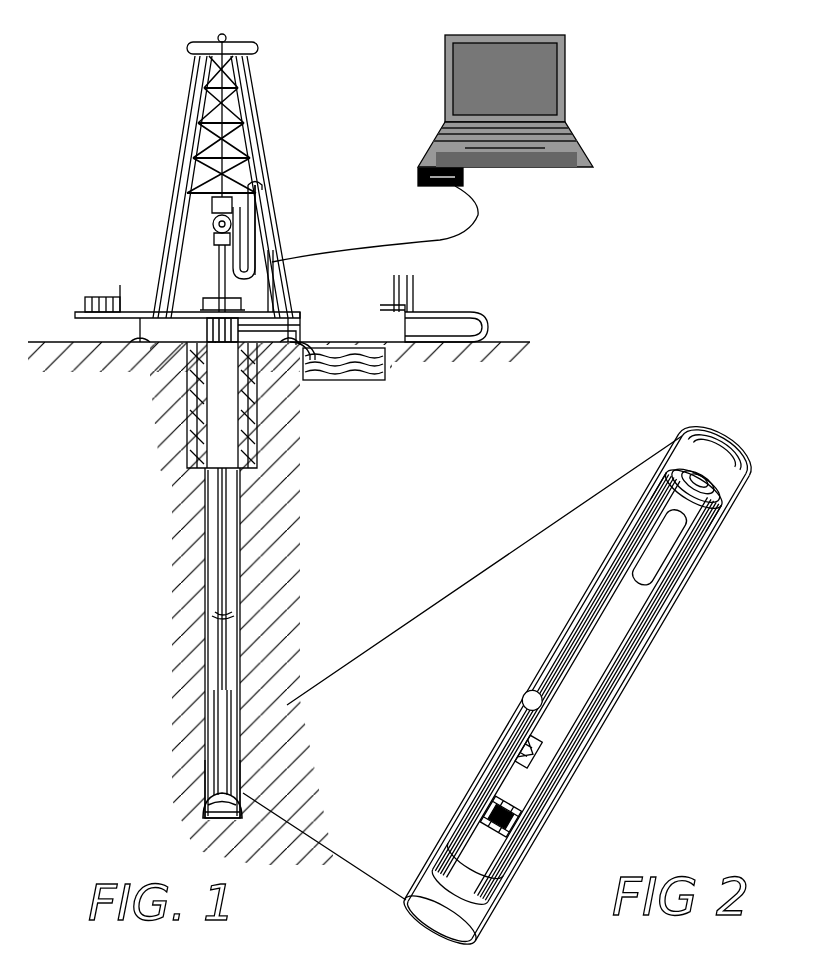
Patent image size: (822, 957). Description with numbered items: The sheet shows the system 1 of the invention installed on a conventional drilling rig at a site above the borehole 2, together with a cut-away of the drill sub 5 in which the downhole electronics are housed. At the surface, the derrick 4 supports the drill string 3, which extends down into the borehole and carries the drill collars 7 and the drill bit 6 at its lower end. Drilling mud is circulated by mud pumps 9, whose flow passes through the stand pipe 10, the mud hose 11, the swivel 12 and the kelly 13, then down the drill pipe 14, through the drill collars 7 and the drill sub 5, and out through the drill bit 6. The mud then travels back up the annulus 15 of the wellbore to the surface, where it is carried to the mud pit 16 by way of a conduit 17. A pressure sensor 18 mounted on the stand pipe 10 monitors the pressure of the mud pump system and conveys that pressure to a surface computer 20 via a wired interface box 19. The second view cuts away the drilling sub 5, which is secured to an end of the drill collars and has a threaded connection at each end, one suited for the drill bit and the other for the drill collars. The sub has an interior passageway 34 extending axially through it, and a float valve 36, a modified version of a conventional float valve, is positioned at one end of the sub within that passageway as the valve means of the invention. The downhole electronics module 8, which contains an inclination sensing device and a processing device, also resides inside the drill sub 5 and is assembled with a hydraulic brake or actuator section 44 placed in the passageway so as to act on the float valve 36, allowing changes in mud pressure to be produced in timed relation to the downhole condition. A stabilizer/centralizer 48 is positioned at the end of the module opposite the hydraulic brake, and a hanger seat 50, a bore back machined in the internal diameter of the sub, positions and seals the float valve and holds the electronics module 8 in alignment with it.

In FIG. 1, the system 1 is at (334, 235).
In FIG. 1, the borehole 2 is at (210, 565).
In FIG. 1, the drill string 3 is at (235, 545).
In FIG. 1, the derrick 4 is at (160, 150).
In FIG. 1, the drill sub 5 is at (203, 772).
In FIG. 2, the drill sub 5 is at (592, 612).
In FIG. 1, the drill bit 6 is at (248, 802).
In FIG. 1, the drill collars 7 is at (236, 712).
In FIG. 2, the downhole electronics module 8 is at (526, 748).
In FIG. 1, the mud pumps 9 is at (485, 314).
In FIG. 1, the stand pipe 10 is at (267, 248).
In FIG. 1, the mud hose 11 is at (257, 215).
In FIG. 1, the swivel 12 is at (212, 222).
In FIG. 1, the kelly 13 is at (218, 272).
In FIG. 1, the drill pipe 14 is at (238, 672).
In FIG. 1, the annulus 15 is at (240, 592).
In FIG. 1, the mud pit 16 is at (383, 380).
In FIG. 1, the conduit 17 is at (345, 383).
In FIG. 1, the pressure sensor 18 is at (270, 261).
In FIG. 1, the wired interface box 19 is at (418, 180).
In FIG. 1, the surface computer 20 is at (440, 62).
In FIG. 2, the interior passageway 34 is at (540, 704).
In FIG. 2, the float valve 36 is at (698, 556).
In FIG. 2, the hydraulic brake 44 is at (600, 685).
In FIG. 2, the stabilizer/centralizer 48 is at (532, 826).
In FIG. 2, the hanger seat 50 is at (680, 600).